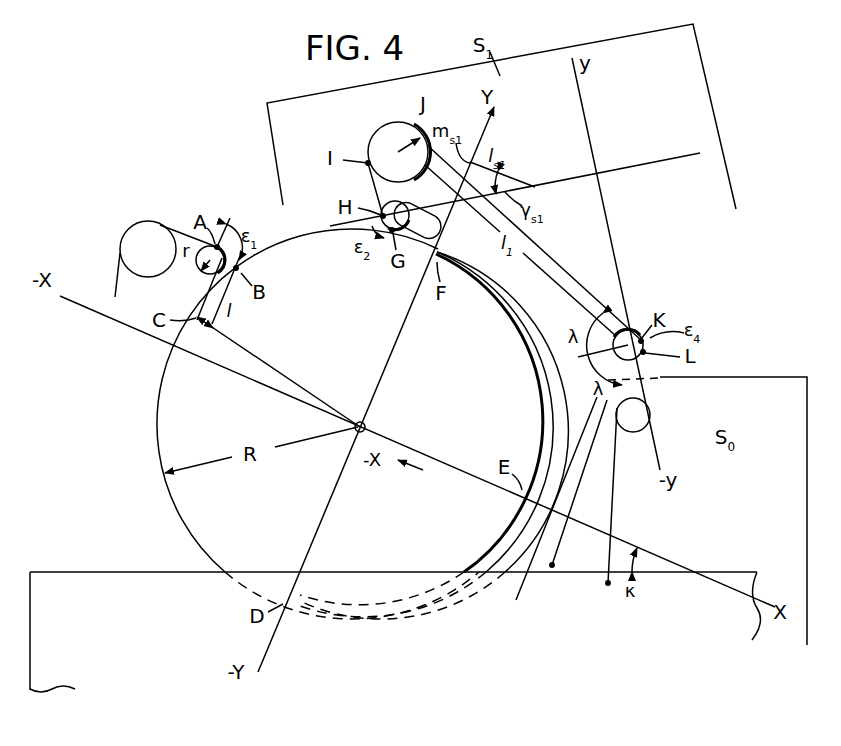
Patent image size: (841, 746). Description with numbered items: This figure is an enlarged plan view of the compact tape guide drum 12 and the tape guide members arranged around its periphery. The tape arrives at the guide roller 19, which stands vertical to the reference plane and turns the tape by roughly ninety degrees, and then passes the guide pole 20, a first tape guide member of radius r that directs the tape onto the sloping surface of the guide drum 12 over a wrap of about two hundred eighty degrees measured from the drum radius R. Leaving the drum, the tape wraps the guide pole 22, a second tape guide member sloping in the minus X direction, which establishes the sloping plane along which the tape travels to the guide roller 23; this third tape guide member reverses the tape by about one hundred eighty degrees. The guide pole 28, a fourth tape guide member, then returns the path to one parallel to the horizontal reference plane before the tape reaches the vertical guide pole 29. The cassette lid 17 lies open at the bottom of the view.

The guide drum 12 is at (157, 437).
The lid 17 is at (112, 571).
The guide roller 19 is at (133, 230).
The guide pole 20 is at (197, 268).
The guide pole 22 is at (440, 231).
The guide roller 23 is at (370, 136).
The guide pole 28 is at (616, 357).
The guide pole 29 is at (649, 413).